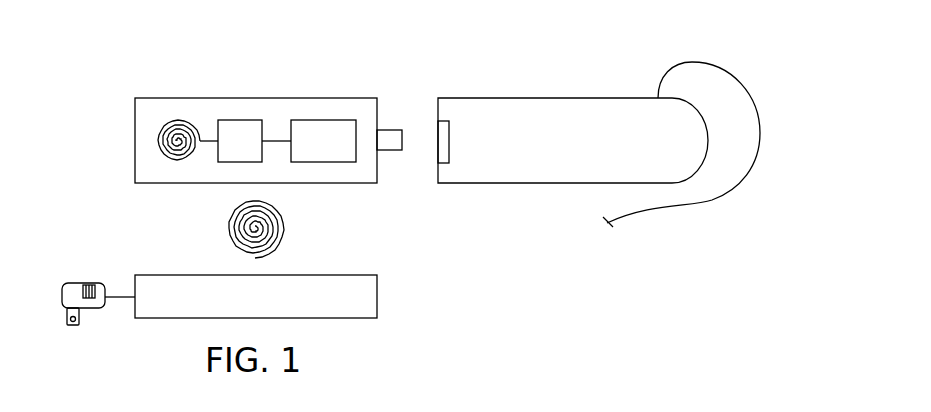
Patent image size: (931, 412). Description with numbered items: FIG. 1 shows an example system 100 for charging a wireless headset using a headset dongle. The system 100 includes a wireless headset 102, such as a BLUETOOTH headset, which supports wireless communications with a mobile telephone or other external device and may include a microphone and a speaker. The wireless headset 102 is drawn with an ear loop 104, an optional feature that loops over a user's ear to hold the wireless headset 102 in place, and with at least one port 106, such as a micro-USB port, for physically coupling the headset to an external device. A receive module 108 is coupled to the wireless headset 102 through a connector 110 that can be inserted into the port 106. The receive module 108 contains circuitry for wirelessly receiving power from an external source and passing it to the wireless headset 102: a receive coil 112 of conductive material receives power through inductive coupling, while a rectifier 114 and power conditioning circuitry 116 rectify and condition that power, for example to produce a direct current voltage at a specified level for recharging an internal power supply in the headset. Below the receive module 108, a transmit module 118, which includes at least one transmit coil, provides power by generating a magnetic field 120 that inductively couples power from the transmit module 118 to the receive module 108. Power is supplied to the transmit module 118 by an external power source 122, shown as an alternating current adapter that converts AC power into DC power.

The system 100 is at (481, 52).
The wireless headset 102 is at (573, 98).
The ear loop 104 is at (730, 70).
The port 106 is at (449, 139).
The receive module 108 is at (135, 138).
The connector 110 is at (390, 130).
The receive coil 112 is at (178, 120).
The rectifier 114 is at (243, 120).
The power conditioning circuitry 116 is at (325, 120).
The transmit module 118 is at (377, 310).
The magnetic field 120 is at (225, 231).
The external power source 122 is at (77, 283).